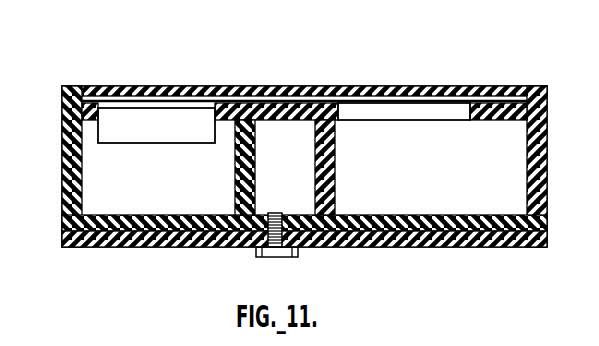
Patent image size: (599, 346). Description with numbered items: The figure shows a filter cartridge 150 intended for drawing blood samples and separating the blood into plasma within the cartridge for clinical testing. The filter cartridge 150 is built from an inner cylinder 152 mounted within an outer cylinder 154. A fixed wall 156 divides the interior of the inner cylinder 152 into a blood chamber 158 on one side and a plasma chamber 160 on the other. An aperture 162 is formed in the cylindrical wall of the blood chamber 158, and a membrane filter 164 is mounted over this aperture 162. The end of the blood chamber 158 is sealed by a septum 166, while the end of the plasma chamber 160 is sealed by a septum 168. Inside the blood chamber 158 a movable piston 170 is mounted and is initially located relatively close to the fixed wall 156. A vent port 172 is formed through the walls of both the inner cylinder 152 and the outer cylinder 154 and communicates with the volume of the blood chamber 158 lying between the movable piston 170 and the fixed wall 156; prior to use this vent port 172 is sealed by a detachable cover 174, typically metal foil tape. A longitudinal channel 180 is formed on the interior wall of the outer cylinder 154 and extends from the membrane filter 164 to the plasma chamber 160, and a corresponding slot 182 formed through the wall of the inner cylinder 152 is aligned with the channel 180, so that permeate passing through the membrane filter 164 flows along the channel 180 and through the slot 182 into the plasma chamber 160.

The filter cartridge 150 is at (464, 48).
The inner cylinder 152 is at (425, 222).
The outer cylinder 154 is at (497, 237).
The fixed wall 156 is at (330, 164).
The blood chamber 158 is at (171, 184).
The plasma chamber 160 is at (463, 182).
The aperture 162 is at (185, 128).
The membrane filter 164 is at (133, 100).
The septum 166 is at (62, 165).
The septum 168 is at (533, 166).
The movable piston 170 is at (250, 164).
The vent port 172 is at (262, 244).
The detachable cover 174 is at (276, 258).
The longitudinal channel 180 is at (275, 100).
The slot 182 is at (405, 115).